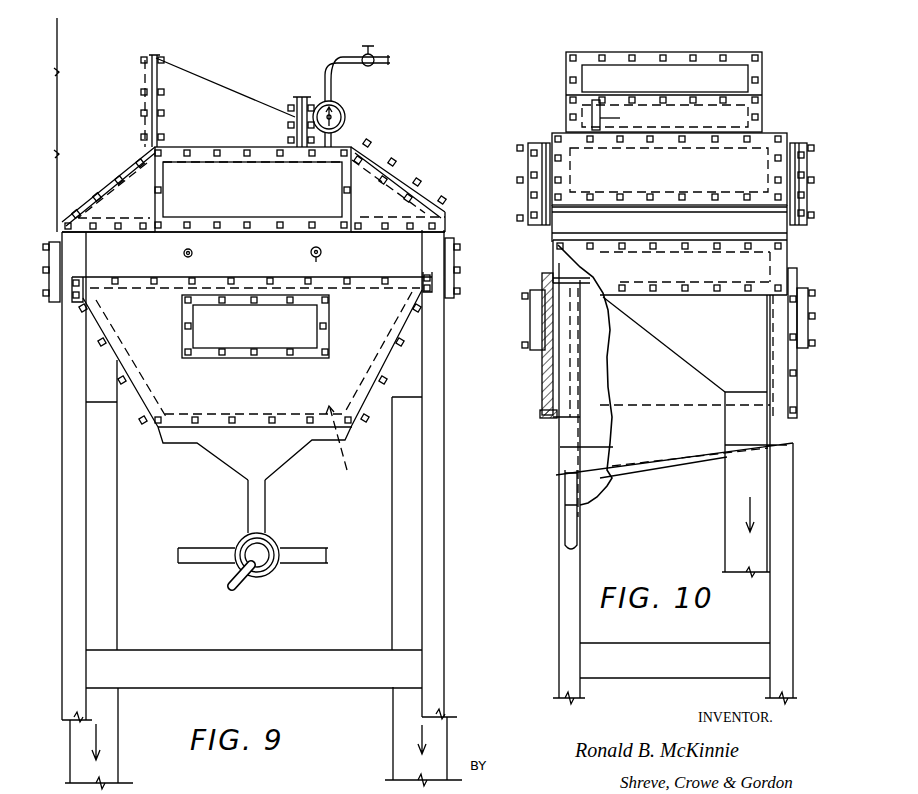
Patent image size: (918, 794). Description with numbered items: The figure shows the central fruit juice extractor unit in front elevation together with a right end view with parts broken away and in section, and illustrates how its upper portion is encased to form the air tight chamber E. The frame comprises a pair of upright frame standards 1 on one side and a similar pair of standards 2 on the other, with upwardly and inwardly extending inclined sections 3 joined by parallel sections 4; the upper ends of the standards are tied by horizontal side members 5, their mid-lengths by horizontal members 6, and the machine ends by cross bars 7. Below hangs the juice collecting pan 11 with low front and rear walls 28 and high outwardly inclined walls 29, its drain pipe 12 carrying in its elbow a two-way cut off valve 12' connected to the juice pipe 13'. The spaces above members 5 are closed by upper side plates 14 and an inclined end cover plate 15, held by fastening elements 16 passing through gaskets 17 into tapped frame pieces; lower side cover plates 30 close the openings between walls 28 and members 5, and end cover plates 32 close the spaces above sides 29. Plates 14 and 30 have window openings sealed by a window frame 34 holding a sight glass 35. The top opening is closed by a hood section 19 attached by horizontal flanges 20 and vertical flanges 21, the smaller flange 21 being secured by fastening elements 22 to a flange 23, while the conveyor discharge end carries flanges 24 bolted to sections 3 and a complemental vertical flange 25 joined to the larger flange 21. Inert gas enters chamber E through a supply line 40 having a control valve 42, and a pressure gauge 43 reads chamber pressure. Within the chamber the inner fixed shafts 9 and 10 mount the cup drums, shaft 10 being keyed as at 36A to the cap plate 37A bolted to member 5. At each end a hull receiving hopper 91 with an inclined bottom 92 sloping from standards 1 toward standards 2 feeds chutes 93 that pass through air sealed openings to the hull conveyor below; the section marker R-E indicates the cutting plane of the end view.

In FIG. 9, the upright frame standards 1 is at (75, 541).
In FIG. 10, the upright frame standards 1 is at (572, 578).
In FIG. 10, the upright frame standards 2 is at (782, 544).
In FIG. 9, the inclined sections 3 is at (106, 193).
In FIG. 9, the parallel sections 4 is at (222, 166).
In FIG. 10, the parallel sections 4 is at (664, 92).
In FIG. 9, the horizontal side members 5 is at (382, 251).
In FIG. 10, the horizontal side members 5 is at (668, 222).
In FIG. 9, the horizontal members 6 is at (133, 666).
In FIG. 10, the cross bars 7 is at (678, 662).
In FIG. 9, the inner fixed shaft 9 is at (183, 255).
In FIG. 9, the inner fixed shaft 10 is at (321, 251).
In FIG. 9, the juice collecting pan 11 is at (243, 452).
In FIG. 10, the juice collecting pan 11 is at (570, 436).
In FIG. 9, the drain pipe 12 is at (253, 528).
In FIG. 10, the drain pipe 12 is at (547, 509).
In FIG. 9, the two-way cut off valve 12' is at (268, 577).
In FIG. 9, the juice pipe 13' is at (313, 534).
In FIG. 9, the upper side plates 14 is at (133, 234).
In FIG. 10, the upper side plates 14 is at (792, 138).
In FIG. 9, the inclined end cover plate 15 is at (378, 152).
In FIG. 10, the inclined end cover plate 15 is at (700, 166).
In FIG. 9, the fastening elements 16 is at (150, 70).
In FIG. 10, the fastening elements 16 is at (682, 248).
In FIG. 9, the gaskets 17 is at (405, 182).
In FIG. 10, the gaskets 17 is at (552, 138).
In FIG. 9, the hood section 19 is at (217, 104).
In FIG. 9, the horizontal flanges 20 is at (240, 145).
In FIG. 9, the vertical flanges 21 is at (158, 60).
In FIG. 9, the fastening elements 22 is at (143, 92).
In FIG. 9, the flange 23 is at (302, 96).
In FIG. 9, the flanges 24 is at (98, 184).
In FIG. 9, the complemental vertical flange 25 is at (151, 56).
In FIG. 9, the front and rear walls 28 is at (182, 455).
In FIG. 10, the front and rear walls 28 is at (557, 463).
In FIG. 9, the inclined walls 29 is at (143, 394).
In FIG. 9, the lower side cover plates 30 is at (262, 390).
In FIG. 10, the lower side cover plates 30 is at (541, 378).
In FIG. 9, the end cover plates 32 is at (53, 303).
In FIG. 10, the end cover plates 32 is at (737, 276).
In FIG. 9, the window frame 34 is at (163, 208).
In FIG. 10, the window frame 34 is at (528, 164).
In FIG. 9, the sight glass 35 is at (316, 190).
In FIG. 9, the key 36A is at (192, 255).
In FIG. 9, the cap plate 37A is at (282, 259).
In FIG. 9, the supply line 40 is at (392, 60).
In FIG. 9, the control valve 42 is at (372, 54).
In FIG. 9, the pressure gauge 43 is at (345, 106).
In FIG. 10, the hull receiving hopper 91 is at (682, 330).
In FIG. 10, the inclined bottom 92 is at (655, 346).
In FIG. 9, the chutes 93 is at (104, 516).
In FIG. 10, the chutes 93 is at (727, 523).
In FIG. 9, the air tight chamber E is at (340, 448).
In FIG. 10, the section line R-E is at (644, 42).